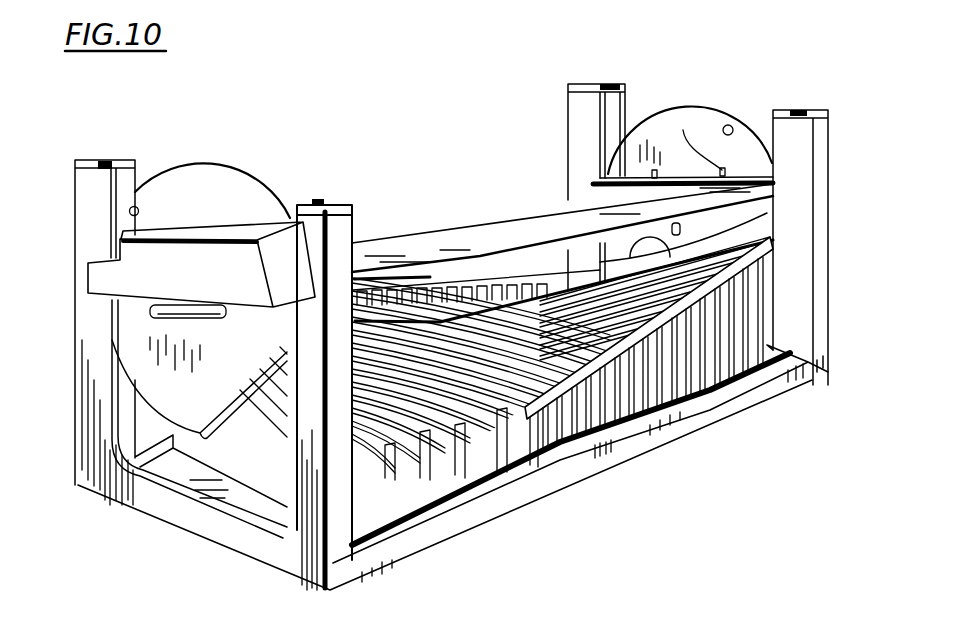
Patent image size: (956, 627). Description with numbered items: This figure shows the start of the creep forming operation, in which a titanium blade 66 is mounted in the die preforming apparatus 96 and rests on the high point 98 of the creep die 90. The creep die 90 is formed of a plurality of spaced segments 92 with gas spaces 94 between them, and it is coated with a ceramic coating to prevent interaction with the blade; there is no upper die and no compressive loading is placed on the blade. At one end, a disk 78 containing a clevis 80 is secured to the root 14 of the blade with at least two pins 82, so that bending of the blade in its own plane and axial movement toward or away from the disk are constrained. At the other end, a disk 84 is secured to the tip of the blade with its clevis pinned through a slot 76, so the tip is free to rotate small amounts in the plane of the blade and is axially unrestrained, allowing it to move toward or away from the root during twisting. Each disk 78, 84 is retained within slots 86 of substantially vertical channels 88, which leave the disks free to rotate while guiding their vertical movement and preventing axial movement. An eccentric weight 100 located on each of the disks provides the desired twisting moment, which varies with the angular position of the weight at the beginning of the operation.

The root 14 is at (778, 186).
The blade 66 is at (490, 236).
The slot 76 is at (160, 314).
The disk 78 is at (707, 127).
The clevis 80 is at (782, 173).
The pins 82 is at (683, 130).
The disk 84 is at (207, 162).
The slots 86 is at (128, 158).
The vertical channels 88 is at (90, 208).
The creep die 90 is at (580, 437).
The spaced segments 92 is at (532, 402).
The gas spaces 94 is at (513, 467).
The die preforming apparatus 96 is at (764, 433).
The high point 98 is at (778, 210).
The eccentric weight 100 is at (107, 286).